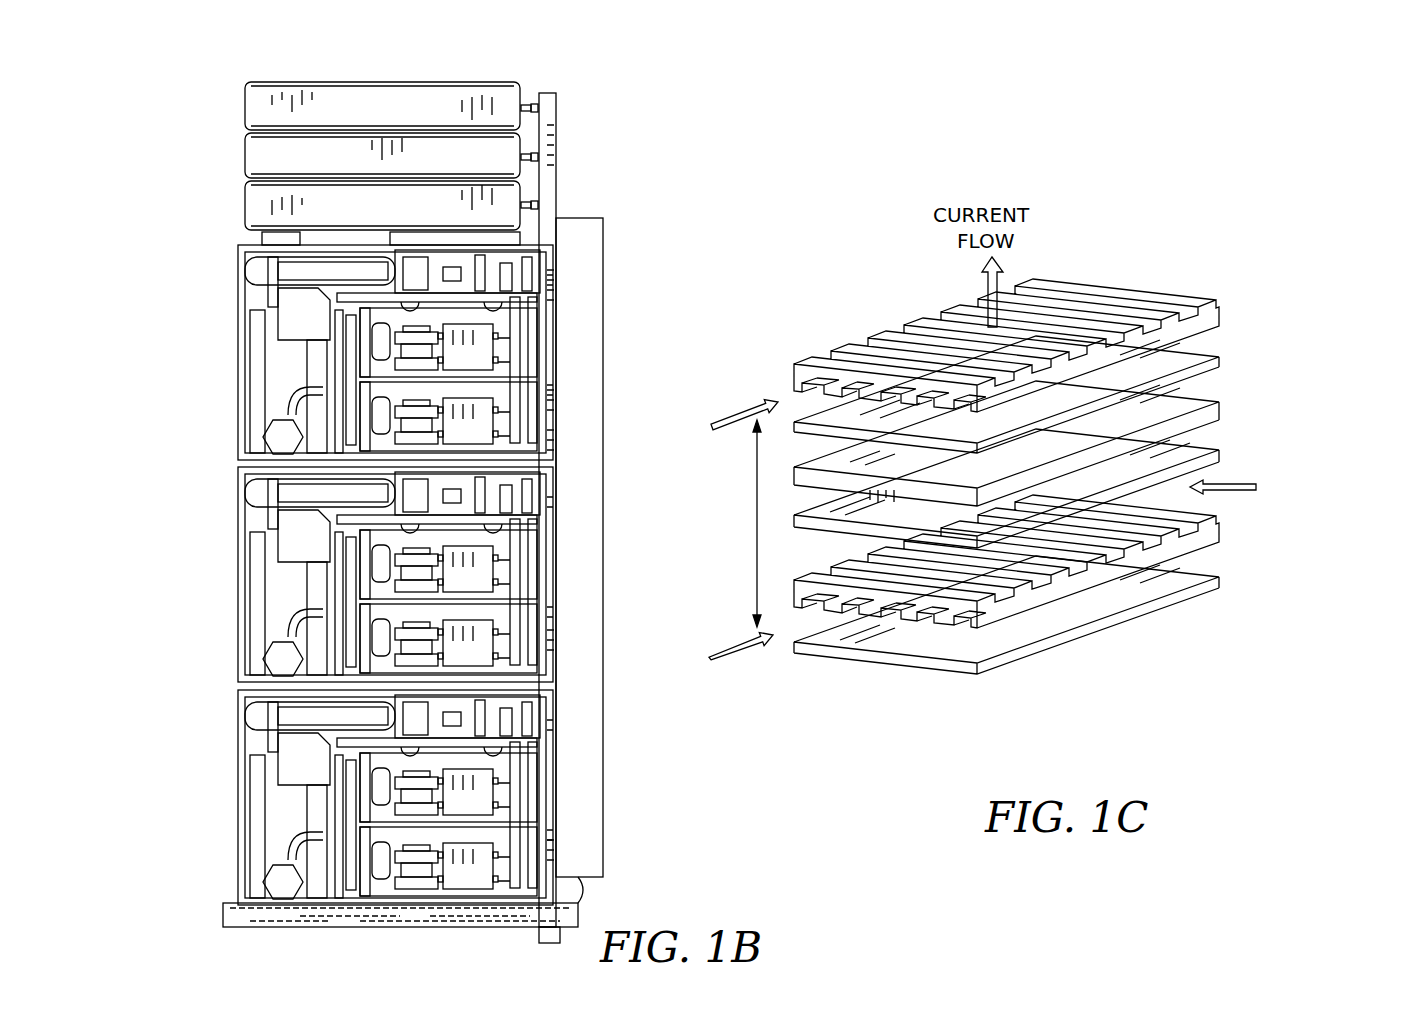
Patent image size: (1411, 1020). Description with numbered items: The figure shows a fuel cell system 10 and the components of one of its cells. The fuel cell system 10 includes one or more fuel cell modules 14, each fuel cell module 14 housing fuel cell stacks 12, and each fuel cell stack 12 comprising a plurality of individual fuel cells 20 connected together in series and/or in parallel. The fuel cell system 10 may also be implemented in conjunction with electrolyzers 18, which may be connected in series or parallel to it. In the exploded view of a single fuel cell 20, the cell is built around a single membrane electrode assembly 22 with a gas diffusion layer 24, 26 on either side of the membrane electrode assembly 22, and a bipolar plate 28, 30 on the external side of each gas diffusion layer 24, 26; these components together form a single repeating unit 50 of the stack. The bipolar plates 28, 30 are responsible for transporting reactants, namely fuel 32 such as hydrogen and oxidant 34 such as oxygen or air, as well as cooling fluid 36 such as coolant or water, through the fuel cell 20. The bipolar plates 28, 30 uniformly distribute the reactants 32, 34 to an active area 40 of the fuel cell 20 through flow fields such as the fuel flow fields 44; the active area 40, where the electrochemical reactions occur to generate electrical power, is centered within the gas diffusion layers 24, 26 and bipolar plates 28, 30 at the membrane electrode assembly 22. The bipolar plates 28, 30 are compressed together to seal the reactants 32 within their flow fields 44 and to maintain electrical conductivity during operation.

In FIG. 1B, the fuel cell system 10 is at (577, 183).
In FIG. 1B, the fuel cell stack 12 is at (555, 342).
In FIG. 1C, the fuel cell stack 12 is at (865, 305).
In FIG. 1B, the fuel cell module 14 is at (215, 245).
In FIG. 1B, the electrolyzer 18 is at (268, 80).
In FIG. 1B, the fuel cell 20 is at (436, 576).
In FIG. 1C, the fuel cell 20 is at (1042, 457).
In FIG. 1C, the membrane electrode assembly 22 is at (1228, 408).
In FIG. 1C, the gas diffusion layer 24 is at (1228, 358).
In FIG. 1C, the gas diffusion layer 26 is at (1228, 453).
In FIG. 1C, the bipolar plate 28 is at (1228, 308).
In FIG. 1C, the bipolar plate 30 is at (1228, 523).
In FIG. 1C, the fuel 32 is at (1232, 487).
In FIG. 1C, the oxidant 34 is at (718, 430).
In FIG. 1C, the cooling fluid 36 is at (1205, 540).
In FIG. 1C, the active area 40 is at (748, 539).
In FIG. 1C, the fuel flow field 44 is at (1163, 290).
In FIG. 1C, the single repeating unit 50 is at (1317, 324).